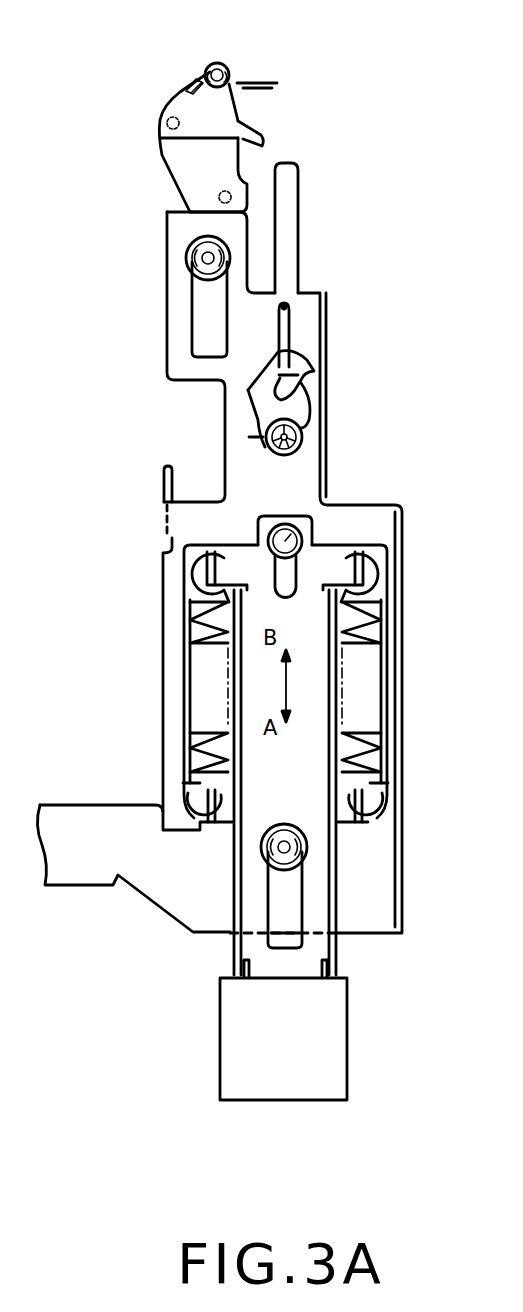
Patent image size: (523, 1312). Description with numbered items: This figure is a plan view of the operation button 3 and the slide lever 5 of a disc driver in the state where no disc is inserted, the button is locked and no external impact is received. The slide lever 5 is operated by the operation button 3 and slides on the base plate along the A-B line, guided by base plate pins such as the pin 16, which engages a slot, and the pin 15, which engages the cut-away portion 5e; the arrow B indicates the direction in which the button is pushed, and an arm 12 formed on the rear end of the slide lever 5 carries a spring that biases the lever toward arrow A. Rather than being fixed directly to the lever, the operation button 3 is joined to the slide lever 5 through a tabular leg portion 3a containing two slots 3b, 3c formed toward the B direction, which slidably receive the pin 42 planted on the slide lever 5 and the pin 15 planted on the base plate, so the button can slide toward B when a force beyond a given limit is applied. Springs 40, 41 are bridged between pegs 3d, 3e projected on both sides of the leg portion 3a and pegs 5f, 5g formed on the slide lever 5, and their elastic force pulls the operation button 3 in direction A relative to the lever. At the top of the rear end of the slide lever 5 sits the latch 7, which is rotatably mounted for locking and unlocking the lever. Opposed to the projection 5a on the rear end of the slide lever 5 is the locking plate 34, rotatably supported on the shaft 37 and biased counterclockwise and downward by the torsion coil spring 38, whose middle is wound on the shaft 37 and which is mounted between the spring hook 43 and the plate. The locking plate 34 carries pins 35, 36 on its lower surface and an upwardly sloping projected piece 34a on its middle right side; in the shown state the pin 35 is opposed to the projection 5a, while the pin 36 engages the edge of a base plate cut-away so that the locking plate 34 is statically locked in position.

The operation button 3 is at (347, 1042).
The tabular leg portion 3a is at (321, 683).
The slot 3b is at (291, 567).
The slot 3c is at (298, 937).
The spring supporting member or peg 3d is at (190, 573).
The spring supporting member or peg 3e is at (365, 568).
The slide lever 5 is at (390, 523).
The projection 5a is at (183, 223).
The cut-away portion 5e is at (298, 893).
The spring supporting member or peg 5f is at (203, 800).
The spring supporting member or peg 5g is at (355, 800).
The latch 7 is at (298, 403).
The arm 12 is at (290, 210).
The pin 15 is at (284, 847).
The pin 16 is at (200, 262).
The locking plate 34 is at (197, 145).
The projected piece 34a is at (262, 140).
The pin 35 is at (233, 202).
The pin 36 is at (162, 117).
The shaft 37 is at (228, 65).
The torsion coil spring 38 is at (197, 87).
The spring 40 is at (213, 745).
The spring 41 is at (352, 743).
The pin 42 is at (284, 533).
The spring hook 43 is at (272, 90).